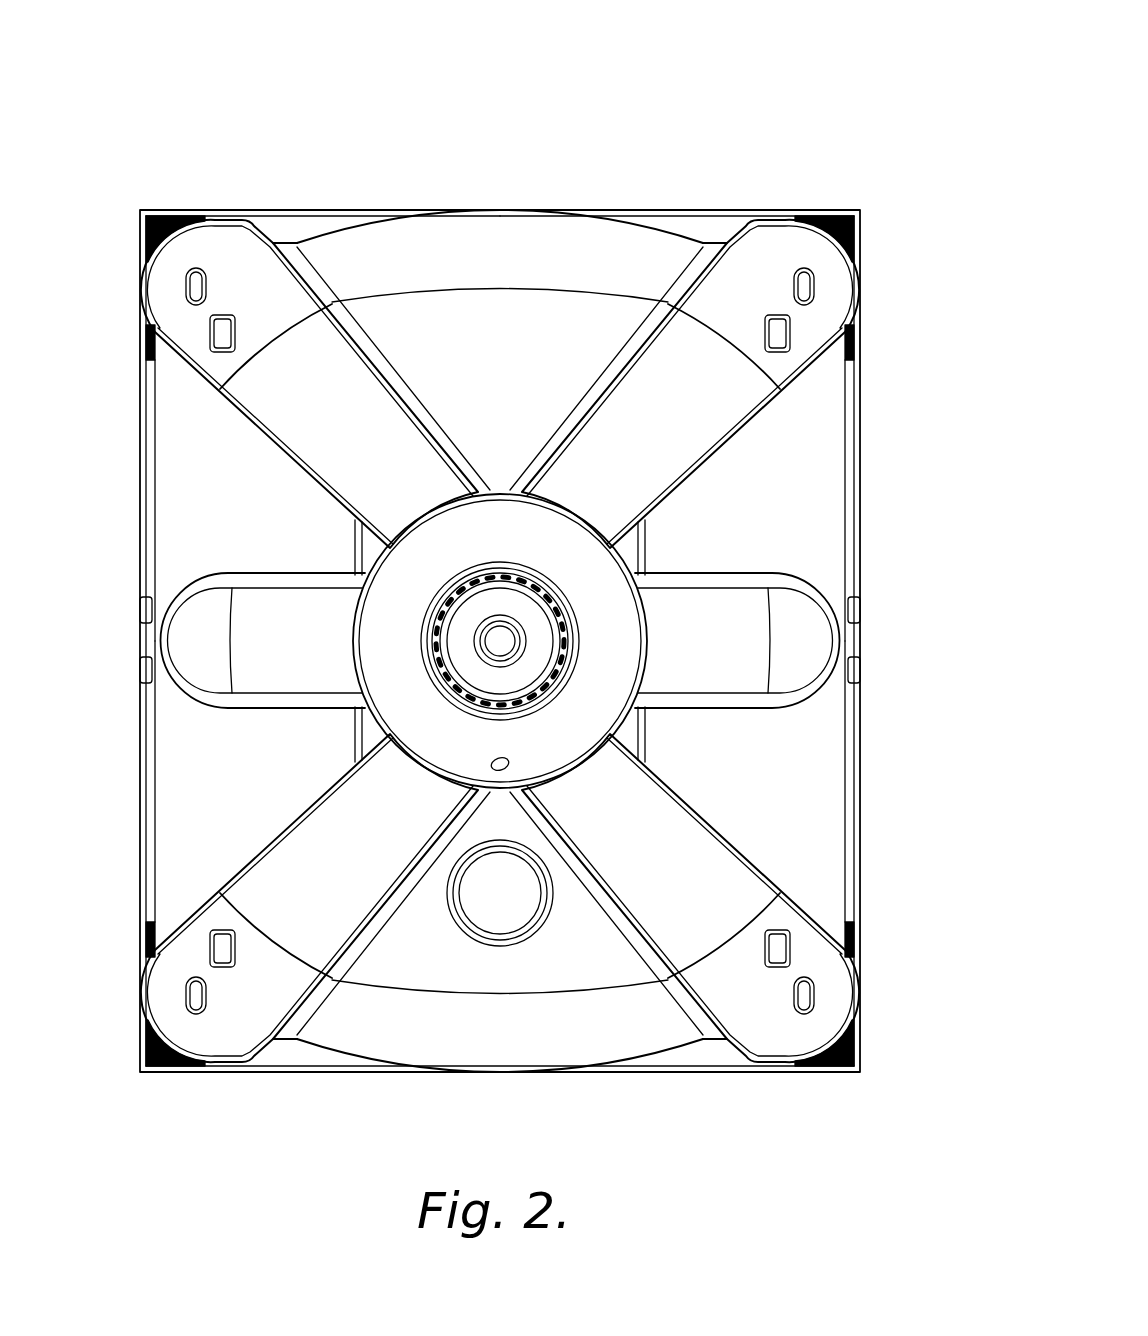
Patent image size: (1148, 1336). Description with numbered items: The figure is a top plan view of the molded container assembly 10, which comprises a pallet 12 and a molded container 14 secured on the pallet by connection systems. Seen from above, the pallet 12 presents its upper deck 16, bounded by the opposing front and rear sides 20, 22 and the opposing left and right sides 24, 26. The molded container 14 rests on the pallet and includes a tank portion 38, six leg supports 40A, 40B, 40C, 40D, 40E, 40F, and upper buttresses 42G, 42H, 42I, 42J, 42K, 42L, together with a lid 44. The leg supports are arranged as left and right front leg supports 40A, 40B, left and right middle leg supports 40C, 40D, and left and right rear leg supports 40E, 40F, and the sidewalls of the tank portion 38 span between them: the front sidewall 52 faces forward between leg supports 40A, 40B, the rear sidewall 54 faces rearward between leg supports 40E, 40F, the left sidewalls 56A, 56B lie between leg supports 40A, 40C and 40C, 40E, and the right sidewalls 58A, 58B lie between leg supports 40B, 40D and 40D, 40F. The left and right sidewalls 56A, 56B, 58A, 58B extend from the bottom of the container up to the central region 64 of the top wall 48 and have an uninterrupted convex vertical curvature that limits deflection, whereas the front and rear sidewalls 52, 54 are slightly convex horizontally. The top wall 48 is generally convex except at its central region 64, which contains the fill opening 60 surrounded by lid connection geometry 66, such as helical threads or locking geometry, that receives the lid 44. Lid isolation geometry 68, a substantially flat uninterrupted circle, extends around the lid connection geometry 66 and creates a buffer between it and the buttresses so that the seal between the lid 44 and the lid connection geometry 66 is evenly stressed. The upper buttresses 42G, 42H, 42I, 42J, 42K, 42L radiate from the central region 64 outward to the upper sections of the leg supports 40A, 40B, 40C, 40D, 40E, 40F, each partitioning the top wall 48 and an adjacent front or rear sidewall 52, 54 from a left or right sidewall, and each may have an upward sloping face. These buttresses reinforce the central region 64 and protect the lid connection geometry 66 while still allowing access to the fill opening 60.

The molded container assembly 10 is at (762, 86).
The pallet 12 is at (277, 195).
The molded container 14 is at (438, 249).
The upper deck 16 is at (735, 226).
The front side 20 is at (300, 1083).
The rear side 22 is at (625, 188).
The left side 24 is at (122, 745).
The right side 26 is at (878, 746).
The tank portion 38 is at (511, 252).
The left front leg support 40A is at (182, 1090).
The right front leg support 40B is at (818, 1095).
The left middle leg support 40C is at (132, 641).
The right middle leg support 40D is at (866, 632).
The left rear leg support 40E is at (124, 243).
The right rear leg support 40F is at (878, 266).
The left front upper buttress 42G is at (283, 892).
The right front upper buttress 42H is at (730, 878).
The left middle upper buttress 42I is at (282, 625).
The right middle upper buttress 42J is at (740, 600).
The left rear upper buttress 42K is at (260, 416).
The right rear upper buttress 42L is at (724, 397).
The lid 44 is at (466, 620).
The top wall 48 is at (410, 318).
The front sidewall 52 is at (386, 1066).
The rear sidewall 54 is at (662, 215).
The left sidewall 56A is at (196, 780).
The left sidewall 56B is at (196, 478).
The right sidewall 58A is at (815, 798).
The right sidewall 58B is at (822, 452).
The fill opening 60 is at (490, 568).
The central region 64 is at (501, 473).
The lid connection geometry 66 is at (563, 597).
The lid isolation geometry 68 is at (612, 708).